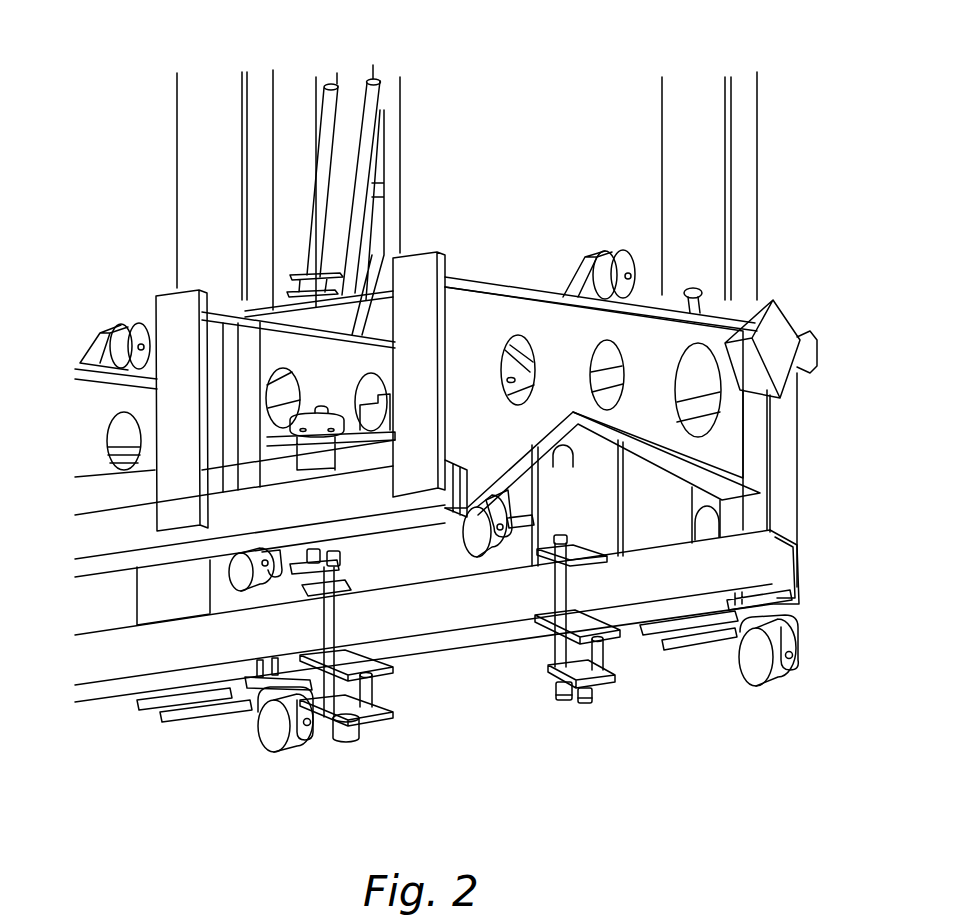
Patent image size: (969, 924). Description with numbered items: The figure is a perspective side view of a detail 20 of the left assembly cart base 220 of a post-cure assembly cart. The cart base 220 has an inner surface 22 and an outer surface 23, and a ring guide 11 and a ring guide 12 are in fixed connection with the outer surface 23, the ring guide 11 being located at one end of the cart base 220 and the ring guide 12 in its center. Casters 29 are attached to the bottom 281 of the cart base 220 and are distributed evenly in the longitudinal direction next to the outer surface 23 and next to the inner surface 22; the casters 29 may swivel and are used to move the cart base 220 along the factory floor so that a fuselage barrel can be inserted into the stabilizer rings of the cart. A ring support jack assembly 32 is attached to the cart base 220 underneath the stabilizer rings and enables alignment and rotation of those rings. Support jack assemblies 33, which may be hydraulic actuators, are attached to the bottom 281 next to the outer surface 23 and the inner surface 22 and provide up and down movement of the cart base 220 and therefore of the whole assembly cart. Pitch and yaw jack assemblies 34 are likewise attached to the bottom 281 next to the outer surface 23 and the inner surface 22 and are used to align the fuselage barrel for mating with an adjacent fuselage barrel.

The ring guide 11 is at (678, 126).
The ring guide 12 is at (195, 112).
The detail 20 is at (134, 796).
The inner surface 22 is at (163, 395).
The outer surface 23 is at (785, 463).
The casters 29 is at (233, 573).
The ring support jack assembly 32 is at (307, 457).
The support jack assemblies 33 is at (348, 742).
The pitch and yaw jack assemblies 34 is at (308, 565).
The left assembly cart base 220 is at (496, 334).
The bottom 281 is at (473, 637).